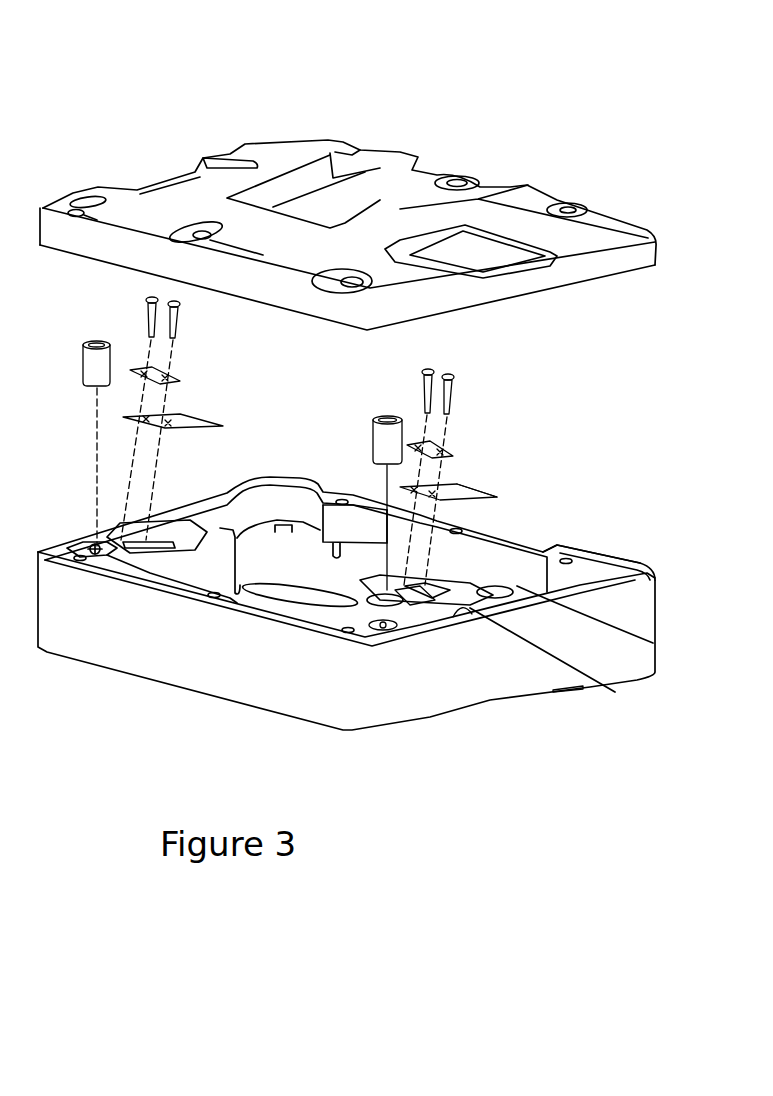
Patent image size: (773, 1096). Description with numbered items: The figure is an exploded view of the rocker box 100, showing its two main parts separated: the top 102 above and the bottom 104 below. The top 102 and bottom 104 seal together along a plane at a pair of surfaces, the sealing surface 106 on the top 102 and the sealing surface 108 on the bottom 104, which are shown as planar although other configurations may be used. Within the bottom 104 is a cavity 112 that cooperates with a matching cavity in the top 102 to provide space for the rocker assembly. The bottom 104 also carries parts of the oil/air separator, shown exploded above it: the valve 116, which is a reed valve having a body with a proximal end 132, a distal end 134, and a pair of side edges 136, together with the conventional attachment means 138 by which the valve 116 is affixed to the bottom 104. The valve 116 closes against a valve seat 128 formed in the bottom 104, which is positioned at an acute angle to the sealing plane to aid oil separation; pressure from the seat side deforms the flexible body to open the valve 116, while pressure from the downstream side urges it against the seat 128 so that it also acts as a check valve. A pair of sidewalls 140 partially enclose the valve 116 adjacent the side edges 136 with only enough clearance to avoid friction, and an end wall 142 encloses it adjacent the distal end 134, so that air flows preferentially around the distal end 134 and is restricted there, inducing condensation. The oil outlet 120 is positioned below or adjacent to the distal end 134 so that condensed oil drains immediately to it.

The rocker box 100 is at (650, 347).
The top 102 is at (547, 192).
The bottom 104 is at (440, 718).
The sealing surface 106 is at (505, 299).
The sealing surface 108 is at (558, 547).
The cavity 112 is at (495, 576).
The valve 116 is at (476, 478).
The oil outlet 120 is at (590, 687).
The valve seat 128 is at (410, 600).
The proximal end 132 is at (382, 496).
The distal end 134 is at (492, 482).
The side edges 136 is at (445, 490).
The attachment means 138 is at (466, 436).
The sidewalls 140 is at (367, 632).
The end wall 142 is at (657, 640).